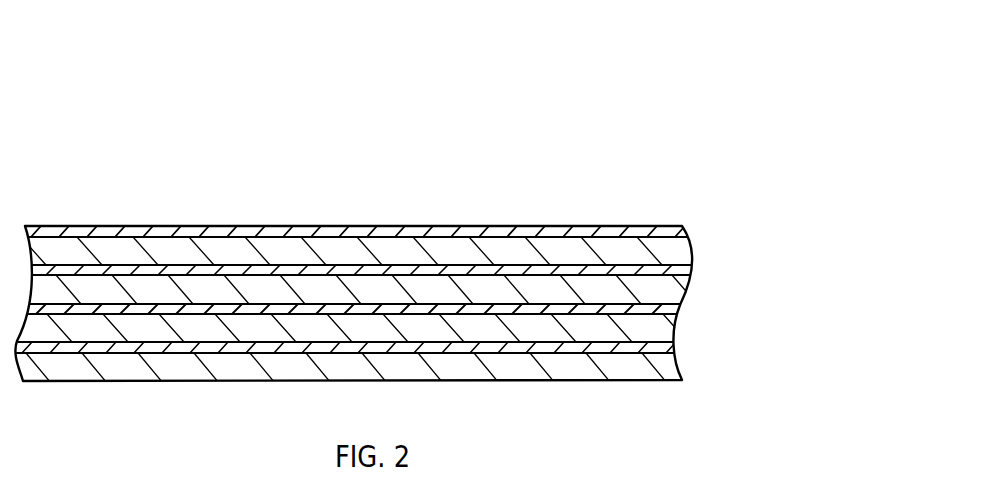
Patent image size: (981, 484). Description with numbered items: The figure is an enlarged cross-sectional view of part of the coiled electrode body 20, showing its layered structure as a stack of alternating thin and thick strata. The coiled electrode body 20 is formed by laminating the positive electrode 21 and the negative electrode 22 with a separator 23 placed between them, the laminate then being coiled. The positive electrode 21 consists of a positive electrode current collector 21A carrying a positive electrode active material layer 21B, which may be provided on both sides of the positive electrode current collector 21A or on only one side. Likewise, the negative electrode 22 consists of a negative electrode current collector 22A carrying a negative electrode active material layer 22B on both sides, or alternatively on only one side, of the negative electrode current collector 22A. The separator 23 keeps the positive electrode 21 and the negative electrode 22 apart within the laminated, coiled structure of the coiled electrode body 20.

The coiled electrode body 20 is at (361, 194).
The positive electrode 21 is at (350, 203).
The positive electrode current collector 21A is at (82, 272).
The positive electrode active material layer 21B is at (57, 149).
The negative electrode 22 is at (366, 243).
The negative electrode current collector 22A is at (378, 348).
The negative electrode active material layer 22B is at (357, 149).
The separator 23 is at (663, 226).